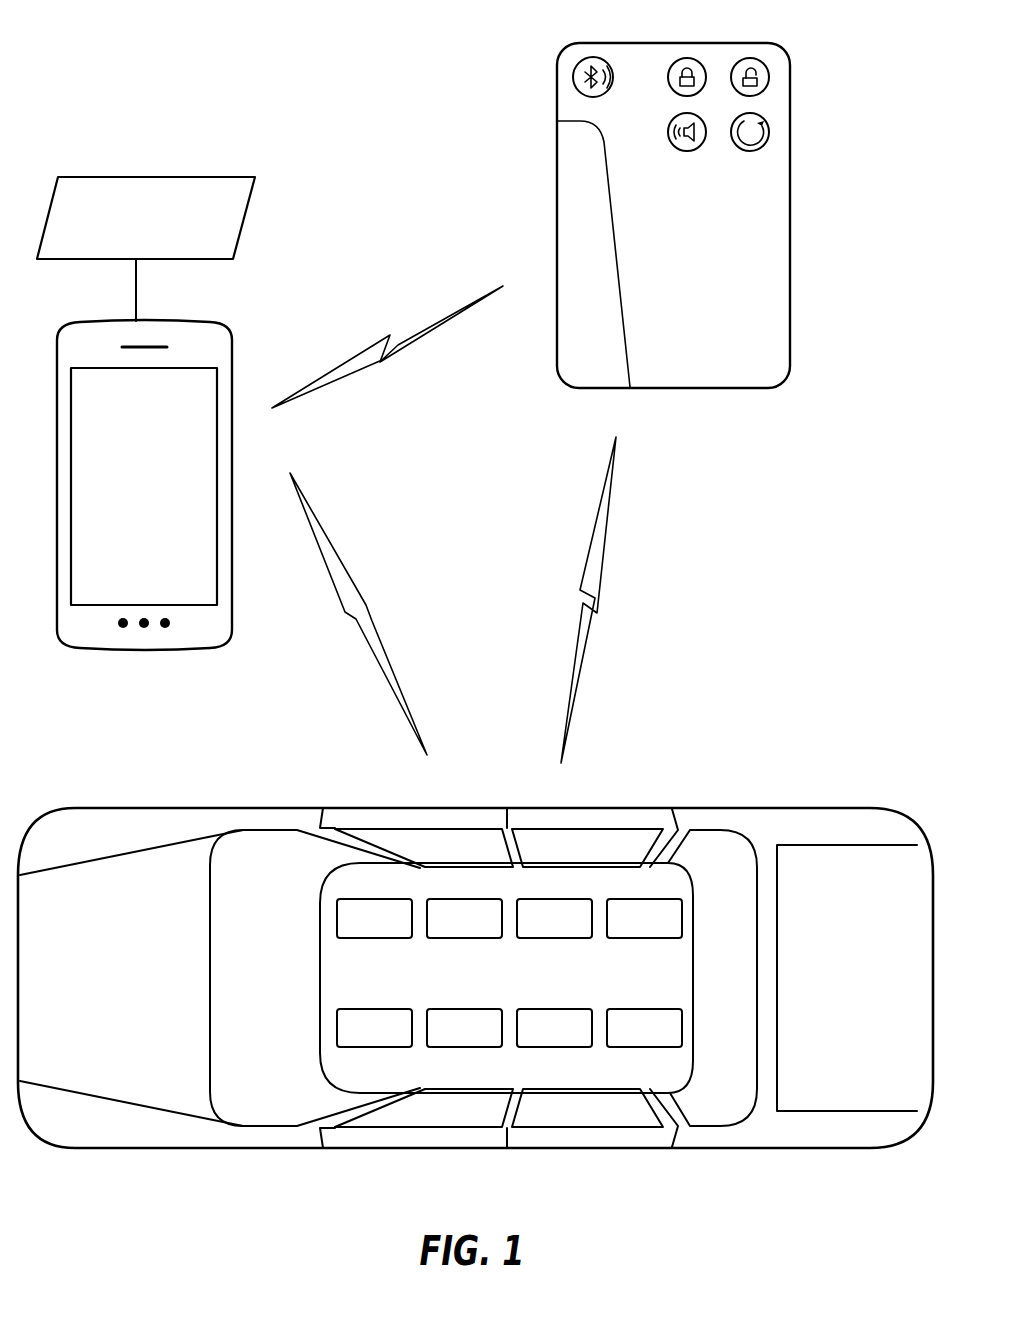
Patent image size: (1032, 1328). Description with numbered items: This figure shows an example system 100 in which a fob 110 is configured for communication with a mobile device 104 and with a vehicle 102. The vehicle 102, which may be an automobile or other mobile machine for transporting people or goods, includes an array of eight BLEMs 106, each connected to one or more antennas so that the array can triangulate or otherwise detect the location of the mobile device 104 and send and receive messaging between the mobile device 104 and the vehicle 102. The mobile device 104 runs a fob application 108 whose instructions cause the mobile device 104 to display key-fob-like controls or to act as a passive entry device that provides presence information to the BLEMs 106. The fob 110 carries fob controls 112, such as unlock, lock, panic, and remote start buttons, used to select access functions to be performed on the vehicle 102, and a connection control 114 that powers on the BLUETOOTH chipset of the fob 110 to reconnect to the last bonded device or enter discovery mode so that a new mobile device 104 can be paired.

The system 100 is at (210, 24).
The vehicle 102 is at (148, 1003).
The mobile device 104 is at (163, 708).
The BLEMs 106 is at (705, 890).
The fob application 108 is at (130, 243).
The fob 110 is at (657, 451).
The fob controls 112 is at (805, 148).
The connection control 114 is at (573, 77).